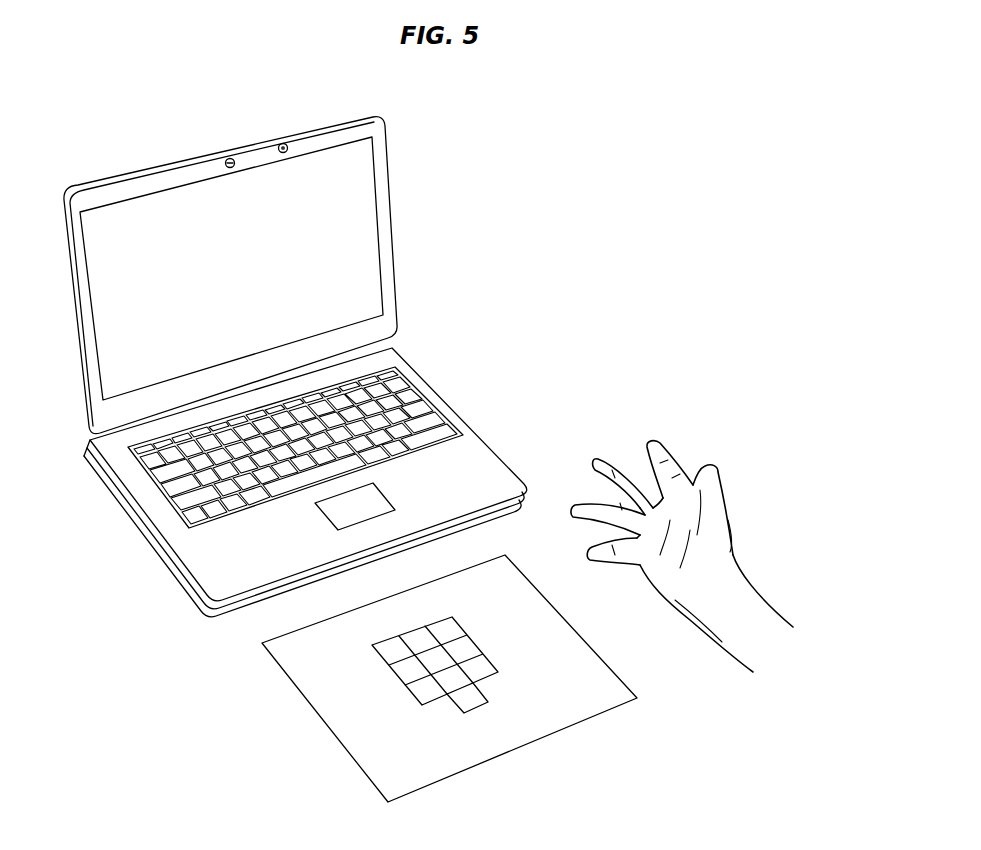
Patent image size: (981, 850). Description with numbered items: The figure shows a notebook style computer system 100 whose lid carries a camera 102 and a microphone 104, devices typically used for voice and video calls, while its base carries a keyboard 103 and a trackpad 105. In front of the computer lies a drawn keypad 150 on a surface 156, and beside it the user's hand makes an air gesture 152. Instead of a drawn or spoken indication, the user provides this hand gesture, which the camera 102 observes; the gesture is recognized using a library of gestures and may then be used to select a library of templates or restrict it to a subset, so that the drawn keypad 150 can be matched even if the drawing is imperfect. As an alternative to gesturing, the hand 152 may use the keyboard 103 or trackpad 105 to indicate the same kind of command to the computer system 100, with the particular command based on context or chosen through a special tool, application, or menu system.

The computer system 100 is at (151, 538).
The camera 102 is at (228, 159).
The keyboard 103 is at (415, 408).
The microphone 104 is at (289, 147).
The trackpad 105 is at (373, 508).
The virtual numeric keypad 150 is at (393, 675).
The air gesture 152 is at (733, 517).
The projected input surface 156 is at (438, 678).